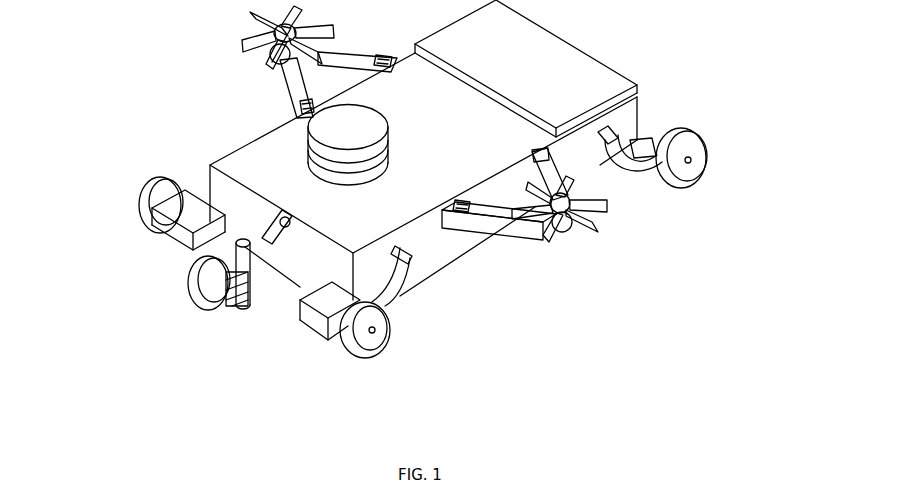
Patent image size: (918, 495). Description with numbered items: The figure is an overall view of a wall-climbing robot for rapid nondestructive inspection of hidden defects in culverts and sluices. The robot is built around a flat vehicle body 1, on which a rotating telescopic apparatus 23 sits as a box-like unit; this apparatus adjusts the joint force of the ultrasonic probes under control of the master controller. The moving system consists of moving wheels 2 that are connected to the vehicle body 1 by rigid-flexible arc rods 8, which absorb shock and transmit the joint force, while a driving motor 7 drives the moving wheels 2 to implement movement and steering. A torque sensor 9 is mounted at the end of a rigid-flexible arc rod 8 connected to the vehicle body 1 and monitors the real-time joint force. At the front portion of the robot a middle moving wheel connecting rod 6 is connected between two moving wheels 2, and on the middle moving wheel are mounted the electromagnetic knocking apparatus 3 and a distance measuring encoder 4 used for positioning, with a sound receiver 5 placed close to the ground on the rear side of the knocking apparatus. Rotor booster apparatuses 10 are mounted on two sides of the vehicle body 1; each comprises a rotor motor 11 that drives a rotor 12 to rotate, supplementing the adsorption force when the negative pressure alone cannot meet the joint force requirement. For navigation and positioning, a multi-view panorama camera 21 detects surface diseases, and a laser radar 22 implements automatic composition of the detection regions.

The vehicle body 1 is at (480, 120).
The moving wheel 2 is at (703, 152).
The electromagnetic knocking apparatus 3 is at (240, 262).
The distance measuring encoder 4 is at (223, 287).
The sound receiver 5 is at (240, 310).
The middle moving wheel connecting rod 6 is at (257, 233).
The driving motor 7 is at (180, 210).
The rigid-flexible arc rod 8 is at (378, 290).
The torque sensor 9 is at (400, 283).
The rotor booster apparatus 10 is at (495, 222).
The rotor motor 11 is at (240, 51).
The rotor 12 is at (250, 24).
The multi-view panorama camera 21 is at (310, 162).
The laser radar 22 is at (310, 121).
The rotating telescopic apparatus 23 is at (595, 75).